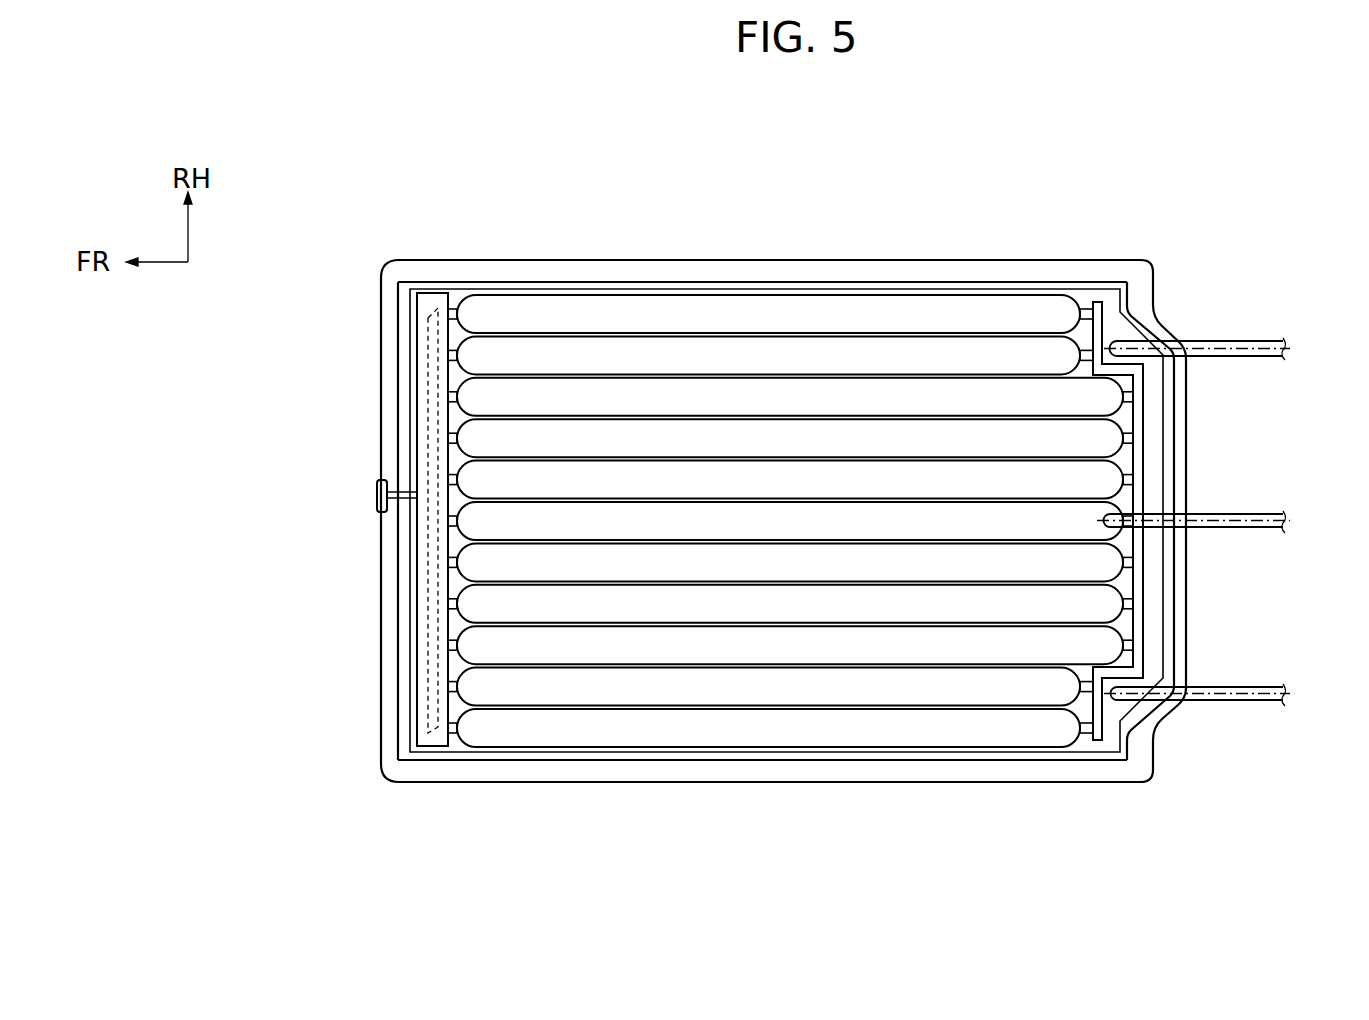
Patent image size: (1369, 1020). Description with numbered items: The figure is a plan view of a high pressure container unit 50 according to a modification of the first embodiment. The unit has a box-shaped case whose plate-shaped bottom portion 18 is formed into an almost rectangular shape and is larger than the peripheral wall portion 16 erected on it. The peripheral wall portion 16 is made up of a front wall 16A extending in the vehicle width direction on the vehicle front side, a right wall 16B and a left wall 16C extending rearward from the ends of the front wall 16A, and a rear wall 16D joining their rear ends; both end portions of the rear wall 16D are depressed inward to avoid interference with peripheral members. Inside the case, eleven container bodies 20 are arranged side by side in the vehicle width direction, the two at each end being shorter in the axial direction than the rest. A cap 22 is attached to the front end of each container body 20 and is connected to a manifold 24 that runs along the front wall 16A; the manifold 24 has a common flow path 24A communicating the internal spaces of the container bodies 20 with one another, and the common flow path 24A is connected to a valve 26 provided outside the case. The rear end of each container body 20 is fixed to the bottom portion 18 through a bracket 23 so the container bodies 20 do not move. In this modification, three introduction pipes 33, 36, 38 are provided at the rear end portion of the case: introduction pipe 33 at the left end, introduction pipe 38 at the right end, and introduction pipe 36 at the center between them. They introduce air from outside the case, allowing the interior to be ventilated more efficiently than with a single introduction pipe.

The high pressure container unit 50 is at (954, 198).
The bottom portion 18 is at (657, 259).
The peripheral wall portion 16 is at (826, 283).
The front wall 16A is at (398, 360).
The right wall 16B is at (565, 281).
The left wall 16C is at (733, 762).
The rear wall 16D is at (1176, 404).
The container bodies 20 is at (1018, 330).
The cap 22 is at (451, 292).
The bracket 23 is at (1108, 344).
The manifold 24 is at (430, 294).
The common flow path 24A is at (430, 666).
The valve 26 is at (377, 494).
The introduction pipe 33 is at (1235, 687).
The introduction pipe 36 is at (1274, 514).
The introduction pipe 38 is at (1266, 340).